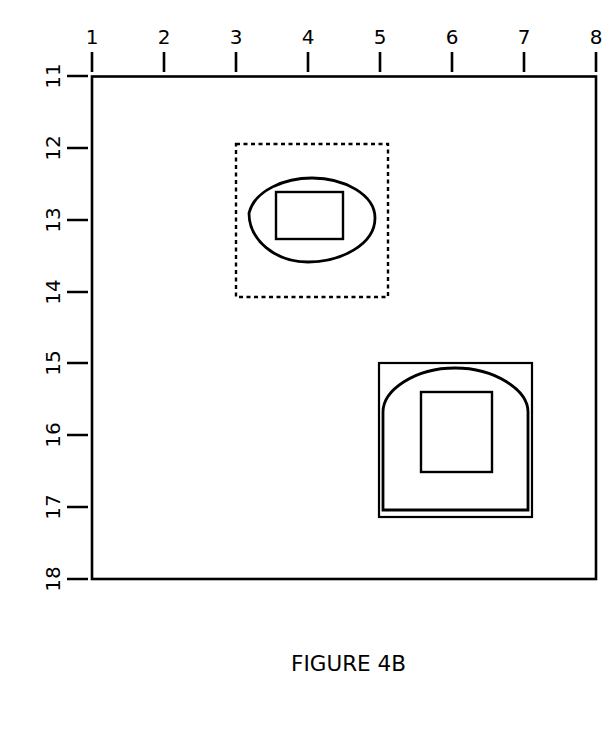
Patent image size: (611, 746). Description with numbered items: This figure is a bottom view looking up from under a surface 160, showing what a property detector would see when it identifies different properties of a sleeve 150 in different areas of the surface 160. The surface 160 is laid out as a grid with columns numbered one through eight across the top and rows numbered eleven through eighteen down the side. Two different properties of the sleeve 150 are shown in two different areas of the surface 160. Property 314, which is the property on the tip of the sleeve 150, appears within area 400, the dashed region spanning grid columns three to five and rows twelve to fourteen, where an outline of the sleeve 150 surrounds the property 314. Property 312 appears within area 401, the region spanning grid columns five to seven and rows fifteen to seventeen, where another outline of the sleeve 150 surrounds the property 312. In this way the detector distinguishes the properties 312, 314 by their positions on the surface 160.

The sleeve 150 is at (267, 186).
The surface 160 is at (487, 579).
The property 312 is at (445, 472).
The property 314 is at (312, 239).
The area 400 is at (388, 207).
The area 401 is at (380, 437).